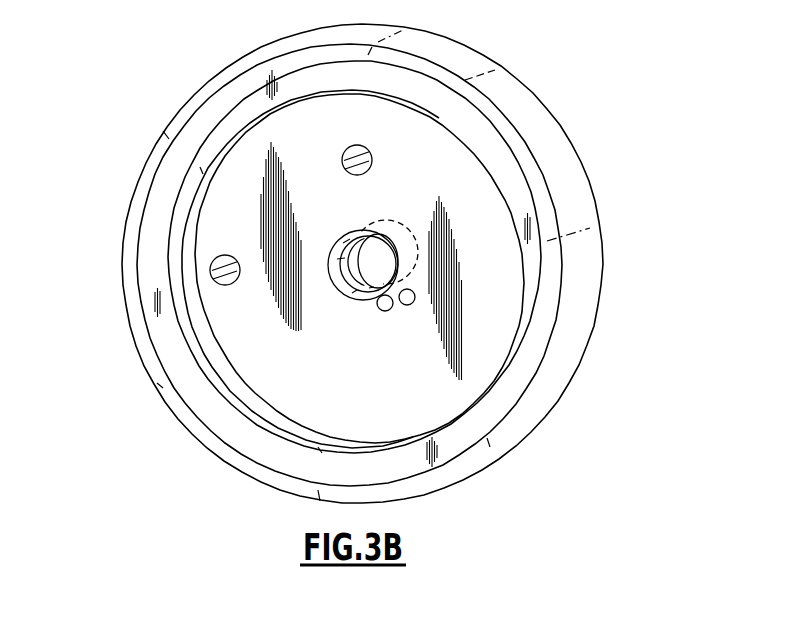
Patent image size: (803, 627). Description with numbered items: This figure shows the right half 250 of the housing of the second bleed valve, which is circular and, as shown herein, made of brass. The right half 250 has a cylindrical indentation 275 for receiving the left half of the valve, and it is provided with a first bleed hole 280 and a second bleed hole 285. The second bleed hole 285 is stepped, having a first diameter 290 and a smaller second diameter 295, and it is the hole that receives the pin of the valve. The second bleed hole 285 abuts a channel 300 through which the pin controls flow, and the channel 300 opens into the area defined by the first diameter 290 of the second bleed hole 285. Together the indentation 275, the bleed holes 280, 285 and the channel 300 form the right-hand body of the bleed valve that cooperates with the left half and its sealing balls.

The right half 250 is at (147, 389).
The cylindrical indentation 275 is at (477, 215).
The first bleed hole 280 is at (372, 157).
The second bleed hole 285 is at (398, 270).
The first diameter 290 is at (342, 292).
The second diameter 295 is at (364, 237).
The channel 300 is at (403, 307).